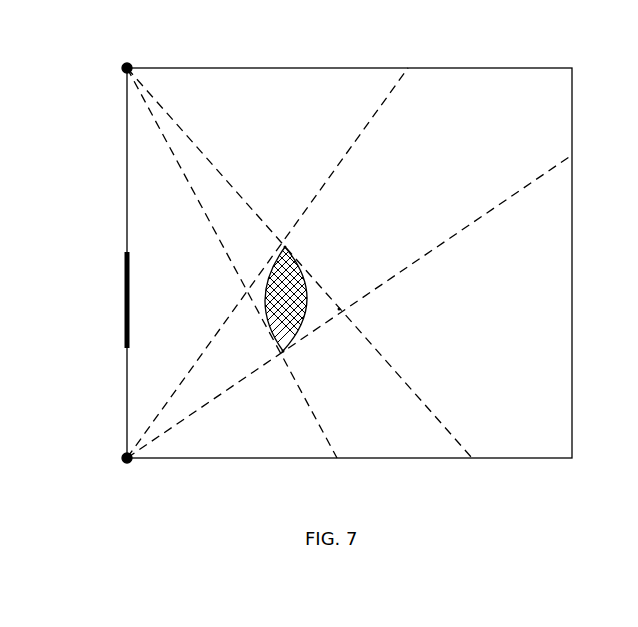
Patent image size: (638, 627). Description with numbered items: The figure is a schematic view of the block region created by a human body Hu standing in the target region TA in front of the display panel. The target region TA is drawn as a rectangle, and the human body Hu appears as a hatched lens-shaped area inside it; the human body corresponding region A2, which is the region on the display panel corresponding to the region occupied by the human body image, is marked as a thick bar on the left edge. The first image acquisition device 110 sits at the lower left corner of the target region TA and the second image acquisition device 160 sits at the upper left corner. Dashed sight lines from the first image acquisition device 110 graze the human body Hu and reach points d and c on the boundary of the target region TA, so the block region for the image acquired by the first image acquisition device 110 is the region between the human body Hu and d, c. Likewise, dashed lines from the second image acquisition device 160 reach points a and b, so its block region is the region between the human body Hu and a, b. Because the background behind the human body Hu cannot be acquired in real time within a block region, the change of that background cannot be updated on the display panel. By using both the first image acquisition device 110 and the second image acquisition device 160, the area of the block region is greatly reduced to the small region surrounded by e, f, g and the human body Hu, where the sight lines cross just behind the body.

The second image acquisition device 160 is at (122, 64).
The first image acquisition device 110 is at (122, 455).
The human body corresponding region A2 is at (124, 290).
The human body Hu is at (287, 278).
The target region TA is at (388, 80).
The boundary point a is at (302, 273).
The boundary point b is at (232, 273).
The boundary point c is at (358, 300).
The boundary point d is at (270, 252).
The boundary point e is at (353, 311).
The boundary point f is at (295, 250).
The boundary point g is at (292, 355).